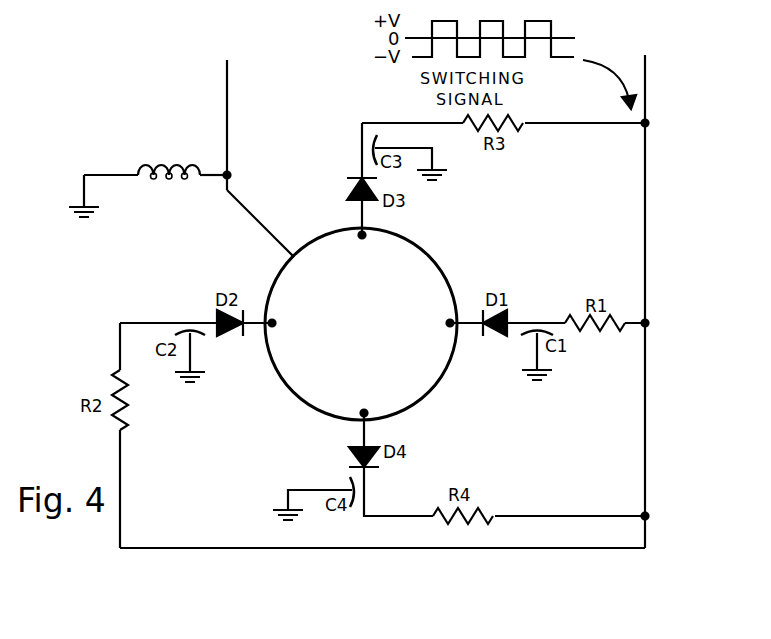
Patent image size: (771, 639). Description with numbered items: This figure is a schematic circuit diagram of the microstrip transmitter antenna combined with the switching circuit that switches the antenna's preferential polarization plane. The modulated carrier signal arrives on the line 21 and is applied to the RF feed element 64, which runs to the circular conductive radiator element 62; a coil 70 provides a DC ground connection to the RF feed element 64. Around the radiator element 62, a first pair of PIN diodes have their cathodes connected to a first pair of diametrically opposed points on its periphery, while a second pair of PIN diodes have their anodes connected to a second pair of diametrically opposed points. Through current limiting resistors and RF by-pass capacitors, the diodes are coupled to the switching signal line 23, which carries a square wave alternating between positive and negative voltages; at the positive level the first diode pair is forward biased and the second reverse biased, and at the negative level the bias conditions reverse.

The line 21 is at (226, 72).
The switching signal line 23 is at (647, 72).
The circular conductive radiator element 62 is at (433, 258).
The RF feed element 64 is at (247, 206).
The coil 70 is at (169, 181).